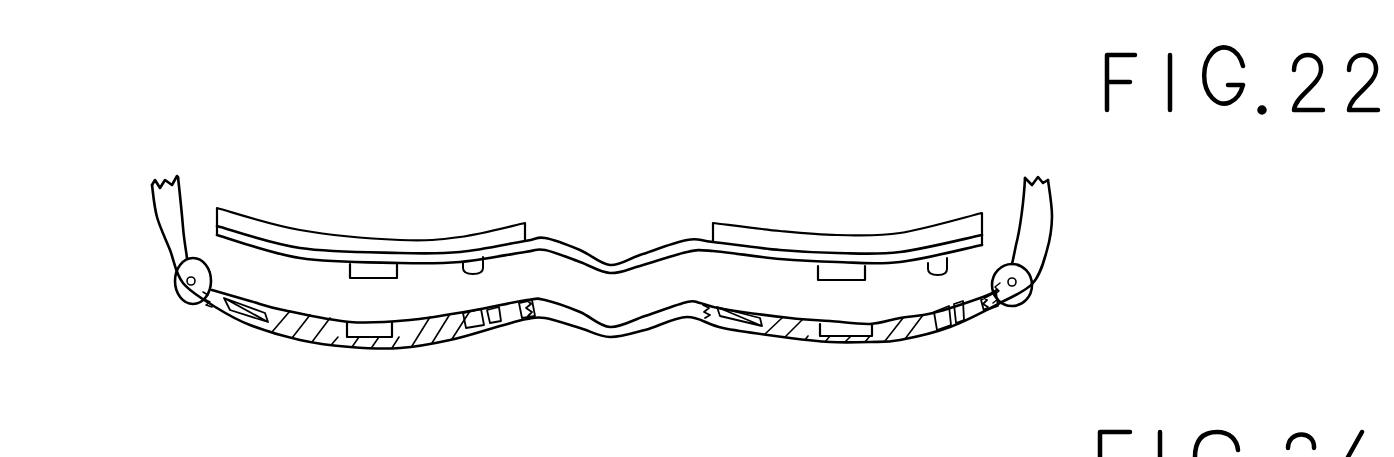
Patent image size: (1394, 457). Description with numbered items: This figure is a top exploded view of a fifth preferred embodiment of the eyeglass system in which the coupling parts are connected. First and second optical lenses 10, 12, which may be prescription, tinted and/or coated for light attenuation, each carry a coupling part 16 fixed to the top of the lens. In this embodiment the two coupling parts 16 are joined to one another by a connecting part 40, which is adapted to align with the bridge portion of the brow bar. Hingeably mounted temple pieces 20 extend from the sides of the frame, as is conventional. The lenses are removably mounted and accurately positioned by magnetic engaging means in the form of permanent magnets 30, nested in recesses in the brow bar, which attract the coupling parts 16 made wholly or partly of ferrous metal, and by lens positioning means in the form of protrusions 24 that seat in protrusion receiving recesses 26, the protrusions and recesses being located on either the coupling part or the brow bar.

The first optical lens 10 is at (745, 232).
The second optical lens 12 is at (282, 224).
The coupling part 16 is at (484, 257).
The temple piece 20 is at (162, 207).
The protrusion 24 is at (378, 276).
The protrusion receiving recess 26 is at (377, 337).
The permanent magnet 30 is at (252, 320).
The connecting part 40 is at (612, 264).